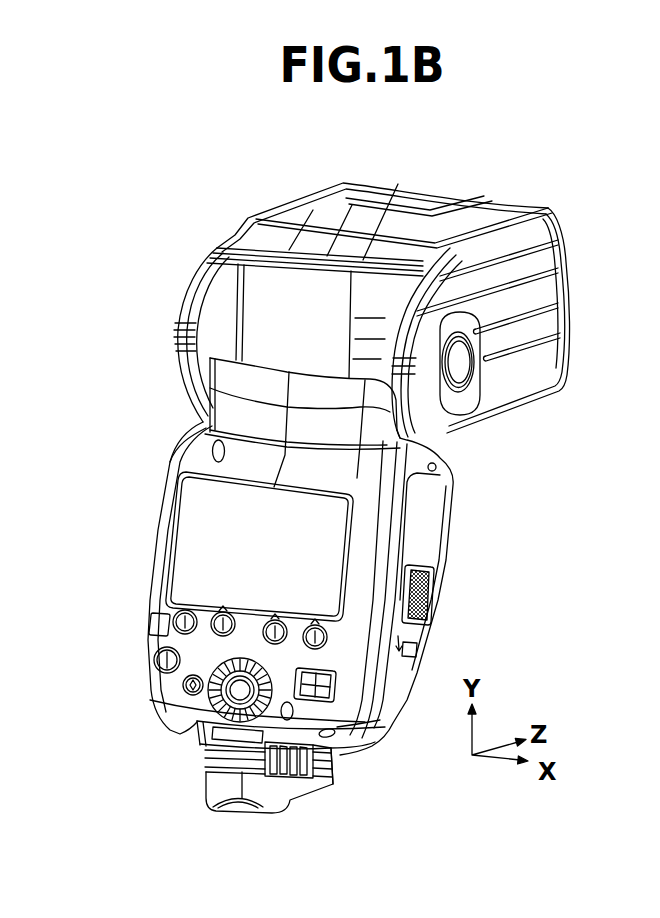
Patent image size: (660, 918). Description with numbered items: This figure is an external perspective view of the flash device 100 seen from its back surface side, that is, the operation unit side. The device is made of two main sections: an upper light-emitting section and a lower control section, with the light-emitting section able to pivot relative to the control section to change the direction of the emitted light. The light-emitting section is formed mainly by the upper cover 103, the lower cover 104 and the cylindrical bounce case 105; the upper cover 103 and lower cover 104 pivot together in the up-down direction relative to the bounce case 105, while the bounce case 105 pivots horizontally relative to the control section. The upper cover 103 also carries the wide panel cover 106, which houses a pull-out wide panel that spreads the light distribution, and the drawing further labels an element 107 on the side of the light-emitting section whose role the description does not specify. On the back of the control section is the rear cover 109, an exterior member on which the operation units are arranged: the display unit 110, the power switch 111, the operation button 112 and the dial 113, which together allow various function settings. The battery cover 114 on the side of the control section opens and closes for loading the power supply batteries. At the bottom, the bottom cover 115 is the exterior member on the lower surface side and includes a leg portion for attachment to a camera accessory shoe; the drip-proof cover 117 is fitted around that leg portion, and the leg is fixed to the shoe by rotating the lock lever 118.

The flash device 100 is at (183, 180).
The upper cover 103 is at (540, 295).
The lower cover 104 is at (505, 385).
The bounce case 105 is at (267, 327).
The wide panel cover 106 is at (447, 196).
The groove 107 is at (520, 350).
The rear cover 109 is at (180, 443).
The display unit 110 is at (208, 520).
The power switch 111 is at (360, 733).
The operation button 112 is at (152, 680).
The dial 113 is at (197, 725).
The battery cover 114 is at (430, 528).
The bottom cover 115 is at (327, 753).
The drip-proof cover 117 is at (205, 783).
The lock lever 118 is at (277, 780).